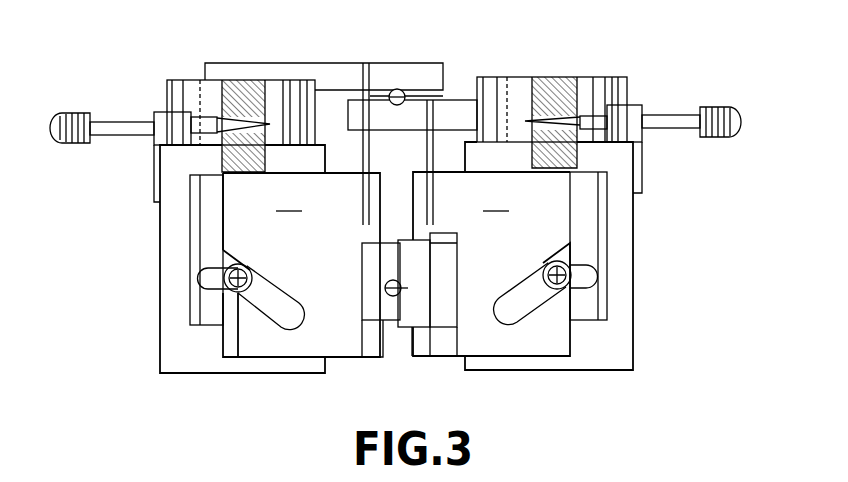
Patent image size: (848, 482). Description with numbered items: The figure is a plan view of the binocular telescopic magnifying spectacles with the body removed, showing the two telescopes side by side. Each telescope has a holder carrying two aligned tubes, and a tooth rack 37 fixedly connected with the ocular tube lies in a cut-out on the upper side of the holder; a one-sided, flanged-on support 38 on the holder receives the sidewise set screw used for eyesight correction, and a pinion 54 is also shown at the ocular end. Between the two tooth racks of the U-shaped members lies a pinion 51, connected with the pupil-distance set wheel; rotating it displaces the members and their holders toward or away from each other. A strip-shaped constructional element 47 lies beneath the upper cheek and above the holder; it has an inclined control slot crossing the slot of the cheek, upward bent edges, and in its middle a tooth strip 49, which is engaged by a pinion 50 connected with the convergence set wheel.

The tooth rack 37 is at (565, 92).
The support 38 is at (633, 120).
The strip-shaped constructional element 47 is at (442, 307).
The tooth strip 49 is at (415, 308).
The pinion 50 is at (393, 296).
The pinion 51 is at (398, 89).
The pinion 54 is at (266, 118).